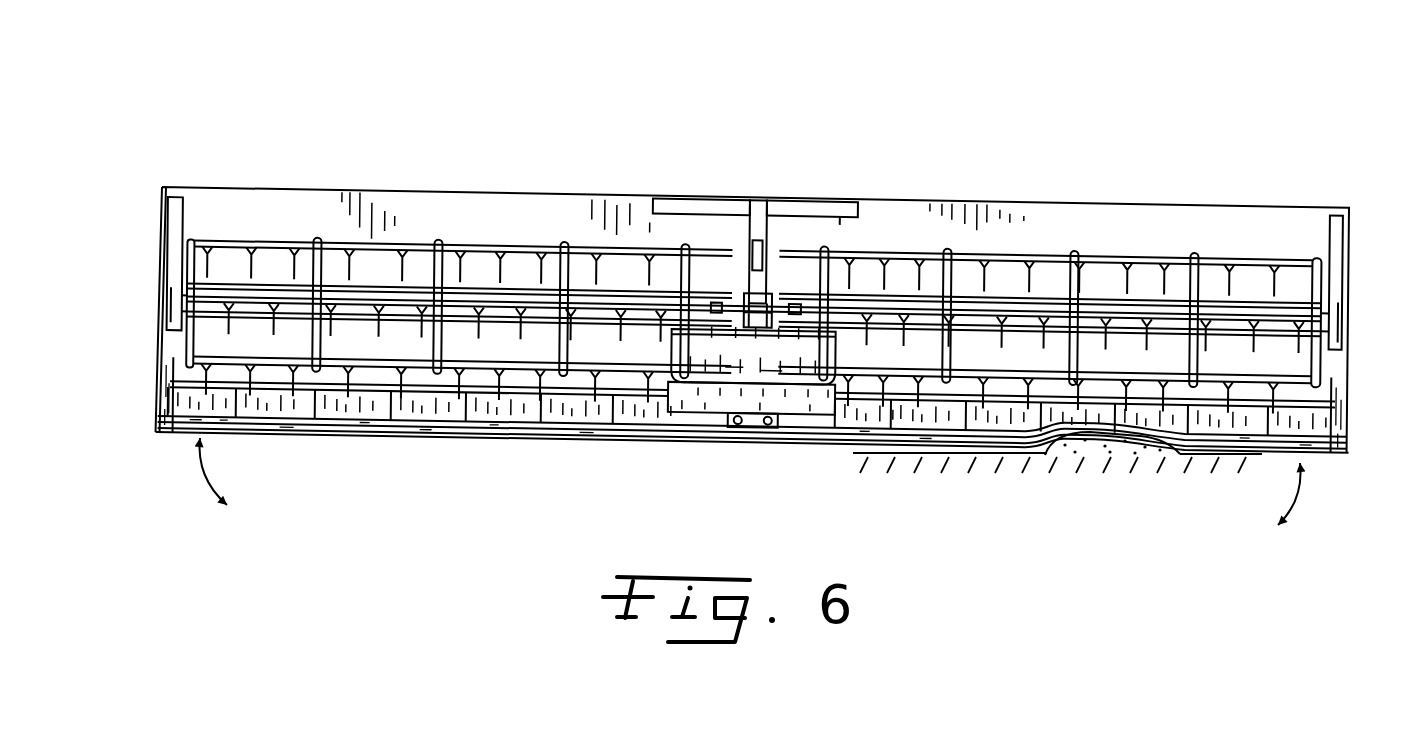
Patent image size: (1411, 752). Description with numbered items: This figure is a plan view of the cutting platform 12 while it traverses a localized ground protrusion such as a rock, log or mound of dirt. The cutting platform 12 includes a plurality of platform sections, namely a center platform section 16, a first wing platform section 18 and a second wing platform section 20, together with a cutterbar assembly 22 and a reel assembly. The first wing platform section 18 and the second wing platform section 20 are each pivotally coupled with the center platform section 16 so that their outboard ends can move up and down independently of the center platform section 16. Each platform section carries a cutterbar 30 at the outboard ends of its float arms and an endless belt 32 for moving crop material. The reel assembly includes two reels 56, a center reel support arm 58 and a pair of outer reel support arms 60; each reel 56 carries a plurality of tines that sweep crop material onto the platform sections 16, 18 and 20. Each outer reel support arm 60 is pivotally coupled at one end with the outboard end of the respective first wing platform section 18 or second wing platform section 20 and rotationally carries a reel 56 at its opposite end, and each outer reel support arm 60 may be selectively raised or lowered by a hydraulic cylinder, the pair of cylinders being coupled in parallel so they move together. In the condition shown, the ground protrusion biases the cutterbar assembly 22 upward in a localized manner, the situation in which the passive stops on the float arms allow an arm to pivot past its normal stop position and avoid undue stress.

The cutting platform 12 is at (973, 108).
The center platform section 16 is at (803, 197).
The first wing platform section 18 is at (1068, 202).
The second wing platform section 20 is at (379, 190).
The cutterbar assembly 22 is at (496, 434).
The cutterbar 30 is at (398, 437).
The endless belt 32 is at (357, 407).
The reel 56 is at (280, 242).
The center reel support arm 58 is at (748, 228).
The outer reel support arm 60 is at (168, 240).